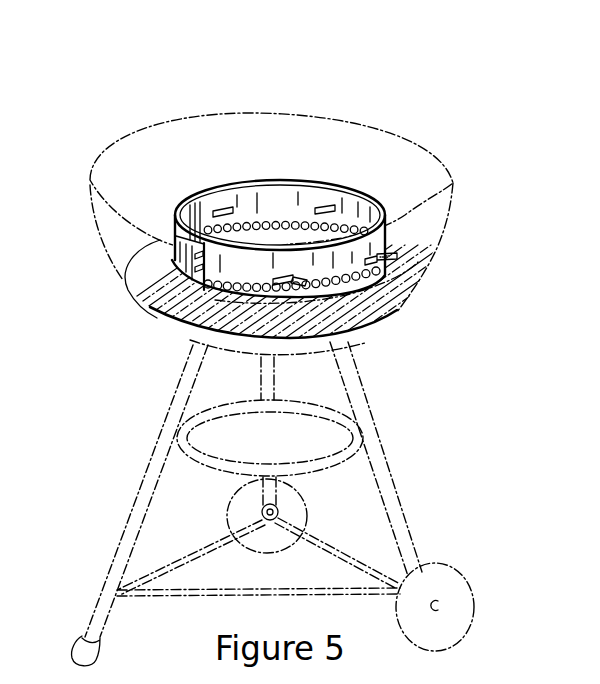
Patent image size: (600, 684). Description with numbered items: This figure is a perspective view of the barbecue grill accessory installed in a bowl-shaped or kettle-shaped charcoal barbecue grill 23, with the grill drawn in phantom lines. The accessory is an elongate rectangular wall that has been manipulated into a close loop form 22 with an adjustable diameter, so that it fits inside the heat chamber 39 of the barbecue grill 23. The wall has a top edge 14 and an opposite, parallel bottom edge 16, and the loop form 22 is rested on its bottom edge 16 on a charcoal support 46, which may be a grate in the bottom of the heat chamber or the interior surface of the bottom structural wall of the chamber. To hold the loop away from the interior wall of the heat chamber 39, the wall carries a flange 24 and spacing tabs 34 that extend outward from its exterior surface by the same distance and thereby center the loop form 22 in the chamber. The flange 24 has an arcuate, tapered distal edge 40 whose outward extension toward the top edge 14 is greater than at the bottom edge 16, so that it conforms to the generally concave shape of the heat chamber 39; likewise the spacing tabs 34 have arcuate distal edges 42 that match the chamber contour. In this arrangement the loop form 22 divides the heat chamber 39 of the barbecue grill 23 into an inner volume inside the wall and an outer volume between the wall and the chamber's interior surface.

The top edge 14 is at (317, 183).
The bottom edge 16 is at (350, 300).
The loop form 22 is at (287, 176).
The barbecue grill 23 is at (330, 366).
The flange 24 is at (192, 280).
The spacing tabs 34 is at (383, 221).
The heat chamber 39 is at (111, 230).
The distal edge of the flange 40 is at (178, 292).
The distal edges of the spacing tabs 42 is at (398, 255).
The charcoal support 46 is at (345, 322).